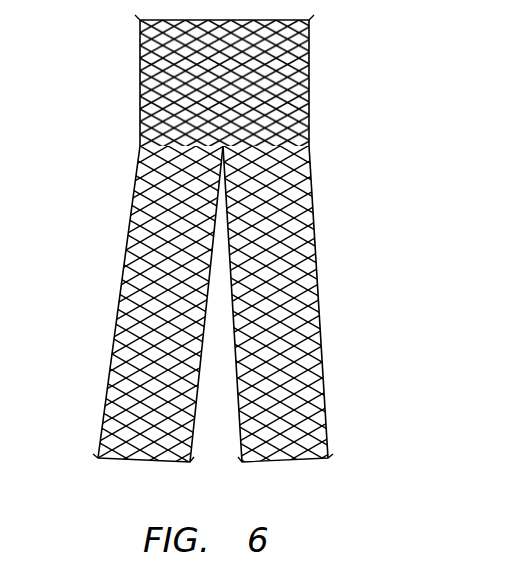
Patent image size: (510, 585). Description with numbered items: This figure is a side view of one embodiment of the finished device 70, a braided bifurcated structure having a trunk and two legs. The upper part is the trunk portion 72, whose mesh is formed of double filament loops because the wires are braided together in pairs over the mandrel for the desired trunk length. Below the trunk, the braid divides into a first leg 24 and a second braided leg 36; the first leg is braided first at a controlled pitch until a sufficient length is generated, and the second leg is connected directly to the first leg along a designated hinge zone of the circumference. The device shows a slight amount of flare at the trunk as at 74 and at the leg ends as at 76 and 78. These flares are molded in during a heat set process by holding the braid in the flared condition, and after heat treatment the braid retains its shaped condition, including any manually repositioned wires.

The finished device 70 is at (351, 145).
The trunk portion 72 is at (140, 83).
The flare at the trunk 74 is at (315, 21).
The first leg 24 is at (125, 257).
The second braided leg 36 is at (316, 258).
The leg end flare 76 is at (97, 456).
The leg end flare 78 is at (333, 457).